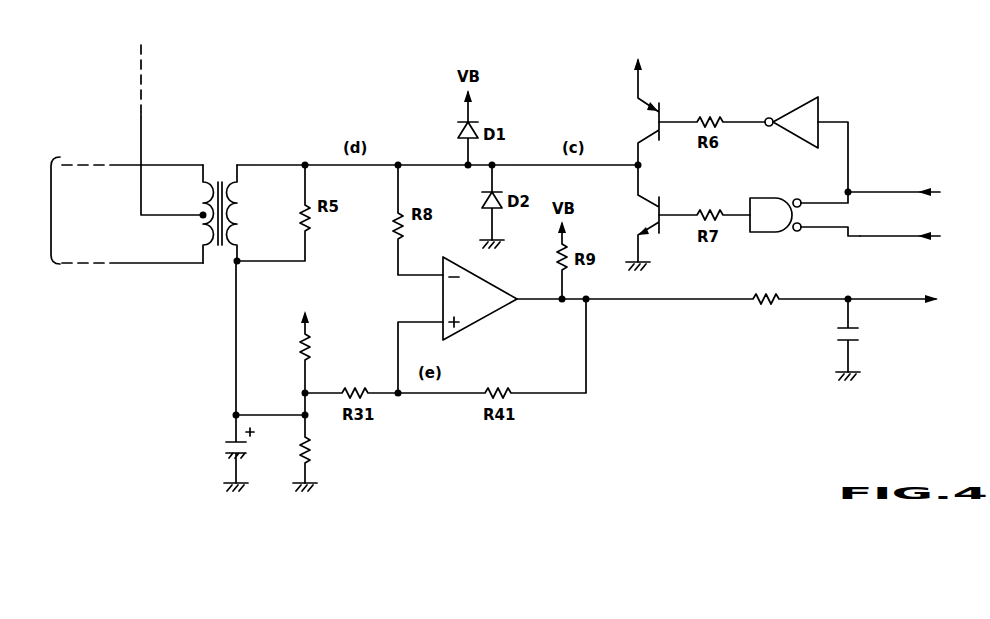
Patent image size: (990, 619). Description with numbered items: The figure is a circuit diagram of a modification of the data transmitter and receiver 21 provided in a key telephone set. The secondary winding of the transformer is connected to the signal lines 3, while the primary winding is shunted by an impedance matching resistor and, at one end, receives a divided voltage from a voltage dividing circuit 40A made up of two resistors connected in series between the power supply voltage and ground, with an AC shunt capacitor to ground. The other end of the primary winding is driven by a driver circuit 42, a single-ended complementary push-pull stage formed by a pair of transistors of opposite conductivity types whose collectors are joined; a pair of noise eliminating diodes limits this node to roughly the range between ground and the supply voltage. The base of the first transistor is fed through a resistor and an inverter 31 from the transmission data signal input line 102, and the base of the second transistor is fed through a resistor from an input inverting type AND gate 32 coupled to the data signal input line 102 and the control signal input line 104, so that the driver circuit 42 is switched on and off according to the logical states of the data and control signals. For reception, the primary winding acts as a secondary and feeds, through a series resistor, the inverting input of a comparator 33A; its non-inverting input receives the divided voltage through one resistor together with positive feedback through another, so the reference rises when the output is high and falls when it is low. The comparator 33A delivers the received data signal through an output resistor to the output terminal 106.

The signal lines 3 is at (120, 154).
The data transmitter and receiver 21 is at (266, 122).
The inverter 31 is at (812, 97).
The input inverting type AND gate 32 is at (765, 196).
The comparator 33A is at (487, 281).
The voltage dividing circuit 40A is at (352, 473).
The driver circuit 42 is at (657, 82).
The transmission data signal input line 102 is at (866, 187).
The control signal input line 104 is at (886, 240).
The output terminal 106 is at (908, 302).